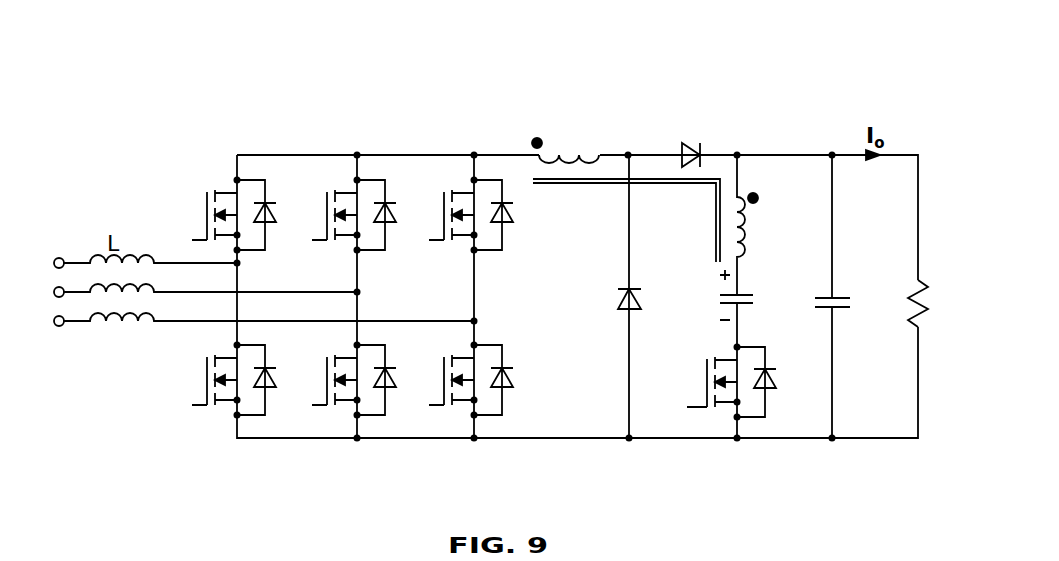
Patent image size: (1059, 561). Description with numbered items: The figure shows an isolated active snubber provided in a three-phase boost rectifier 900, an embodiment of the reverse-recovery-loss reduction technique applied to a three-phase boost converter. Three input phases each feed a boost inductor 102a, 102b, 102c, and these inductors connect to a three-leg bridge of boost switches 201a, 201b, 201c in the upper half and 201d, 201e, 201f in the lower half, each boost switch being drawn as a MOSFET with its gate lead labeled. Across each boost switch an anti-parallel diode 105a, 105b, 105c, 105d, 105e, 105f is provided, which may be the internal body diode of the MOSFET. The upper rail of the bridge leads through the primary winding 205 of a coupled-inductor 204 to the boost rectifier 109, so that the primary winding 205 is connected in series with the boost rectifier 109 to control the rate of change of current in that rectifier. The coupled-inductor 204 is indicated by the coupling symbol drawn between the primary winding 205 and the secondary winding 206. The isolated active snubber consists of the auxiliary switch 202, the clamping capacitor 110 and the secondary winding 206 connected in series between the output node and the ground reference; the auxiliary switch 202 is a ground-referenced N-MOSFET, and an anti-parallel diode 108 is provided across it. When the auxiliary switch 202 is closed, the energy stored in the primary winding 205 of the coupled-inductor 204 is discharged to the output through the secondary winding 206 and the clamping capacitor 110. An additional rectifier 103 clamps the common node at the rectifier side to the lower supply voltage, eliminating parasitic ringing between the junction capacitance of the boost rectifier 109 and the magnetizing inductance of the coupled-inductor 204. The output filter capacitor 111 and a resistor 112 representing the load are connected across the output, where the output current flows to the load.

The three-phase boost rectifier 900 is at (713, 42).
The boost inductor 102a is at (95, 258).
The boost inductor 102b is at (155, 291).
The boost inductor 102c is at (107, 325).
The boost switch 201a is at (192, 241).
The boost switch 201b is at (314, 243).
The boost switch 201c is at (430, 243).
The boost switch 201d is at (204, 407).
The boost switch 201e is at (316, 407).
The boost switch 201f is at (433, 407).
The anti-parallel diode 105a is at (266, 201).
The anti-parallel diode 105b is at (386, 201).
The anti-parallel diode 105c is at (505, 222).
The anti-parallel diode 105d is at (267, 368).
The anti-parallel diode 105e is at (386, 368).
The anti-parallel diode 105f is at (512, 383).
The primary winding 205 is at (588, 151).
The coupled-inductor 204 is at (677, 200).
The boost rectifier 109 is at (702, 147).
The secondary winding 206 is at (747, 213).
The rectifier 103 is at (636, 306).
The clamping capacitor 110 is at (752, 306).
The auxiliary switch 202 is at (690, 408).
The anti-parallel diode 108 is at (773, 390).
The output filter capacitor 111 is at (840, 297).
The resistor 112 is at (912, 290).